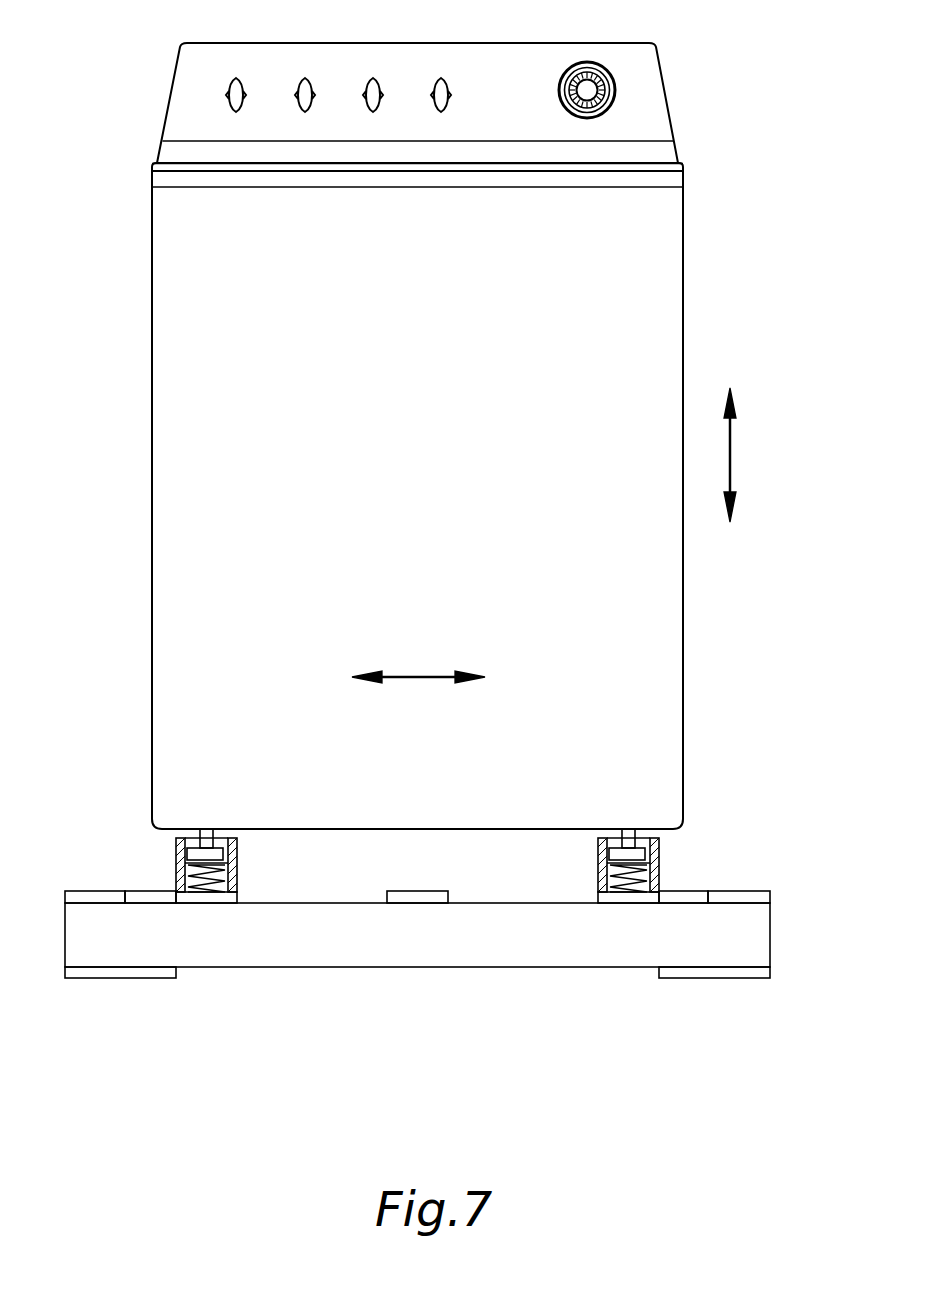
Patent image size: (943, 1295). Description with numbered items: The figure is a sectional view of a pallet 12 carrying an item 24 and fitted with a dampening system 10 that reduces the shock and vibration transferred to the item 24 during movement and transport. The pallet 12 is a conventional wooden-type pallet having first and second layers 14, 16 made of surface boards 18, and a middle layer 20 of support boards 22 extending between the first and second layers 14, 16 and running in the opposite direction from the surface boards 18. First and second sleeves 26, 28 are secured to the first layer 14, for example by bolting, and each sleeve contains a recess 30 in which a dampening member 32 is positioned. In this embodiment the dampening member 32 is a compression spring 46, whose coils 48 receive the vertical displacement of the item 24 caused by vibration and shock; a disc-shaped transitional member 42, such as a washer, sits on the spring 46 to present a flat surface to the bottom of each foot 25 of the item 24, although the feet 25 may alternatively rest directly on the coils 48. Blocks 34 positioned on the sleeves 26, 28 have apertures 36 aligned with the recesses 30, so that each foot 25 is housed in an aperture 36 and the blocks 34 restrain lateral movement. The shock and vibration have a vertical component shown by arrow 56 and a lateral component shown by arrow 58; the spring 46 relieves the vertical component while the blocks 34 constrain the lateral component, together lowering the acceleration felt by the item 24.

The dampening system 10 is at (88, 862).
The pallet 12 is at (740, 890).
The first layer 14 is at (80, 891).
The second layer 16 is at (90, 980).
The surface boards 18 is at (65, 897).
The middle layer 20 is at (772, 936).
The support boards 22 is at (412, 946).
The item 24 is at (173, 322).
The foot 25 is at (210, 835).
The first sleeve 26 is at (659, 878).
The second sleeve 28 is at (176, 872).
The recess 30 is at (237, 878).
The dampening member 32 is at (182, 882).
The block 34 is at (598, 853).
The aperture 36 is at (617, 840).
The transitional member 42 is at (237, 858).
The compression spring 46 is at (600, 878).
The coils 48 is at (659, 865).
The arrow 56 is at (732, 454).
The arrow 58 is at (418, 672).